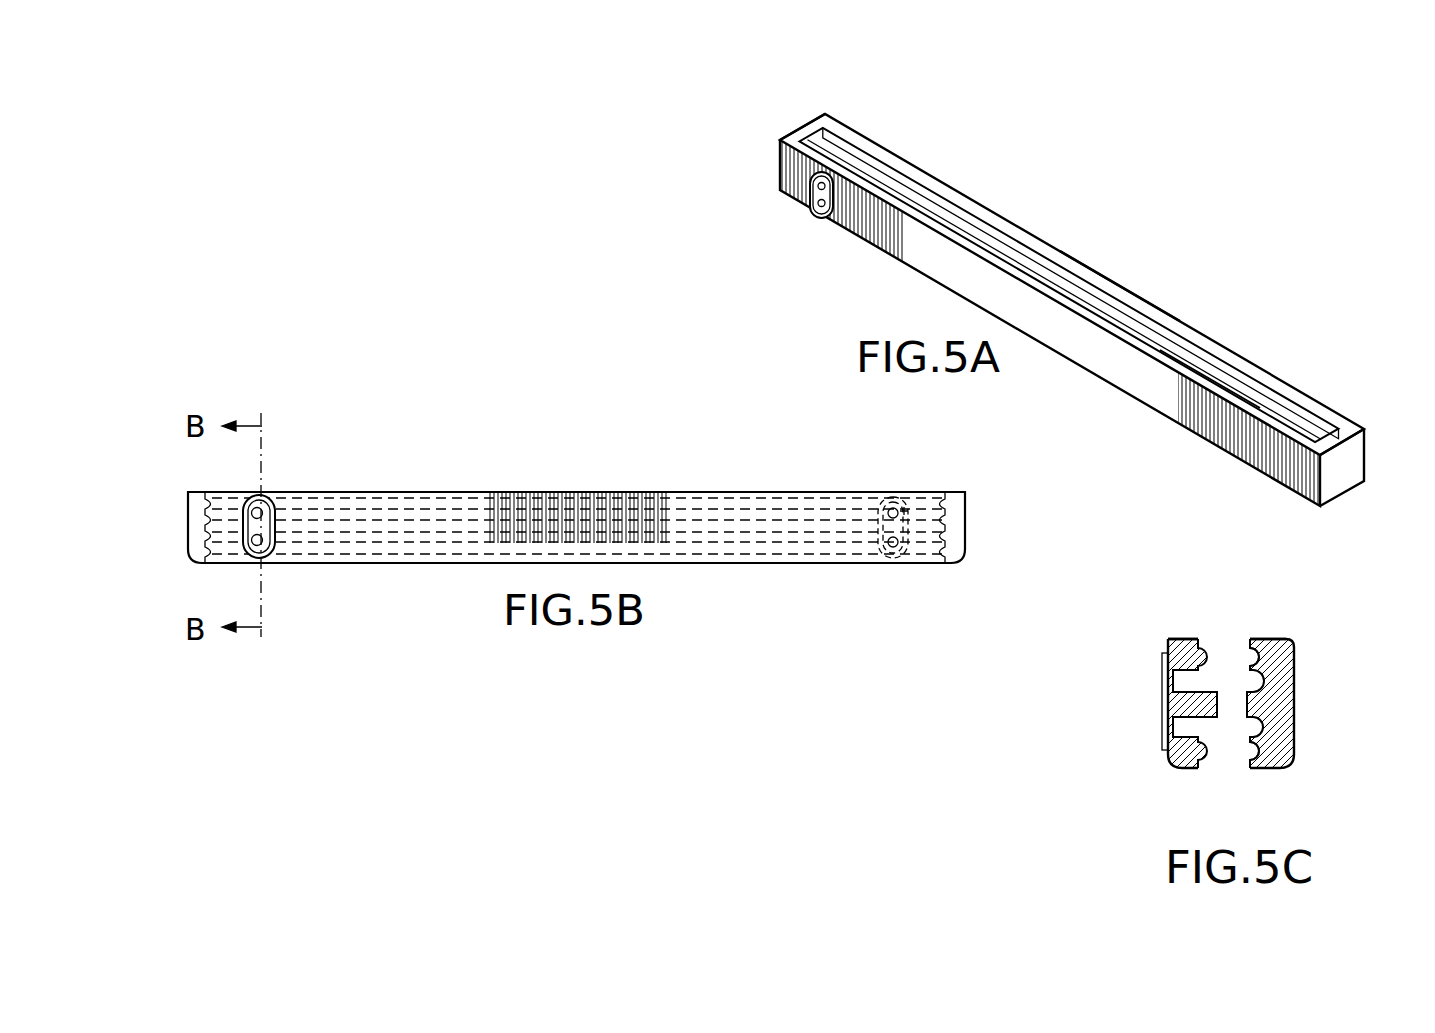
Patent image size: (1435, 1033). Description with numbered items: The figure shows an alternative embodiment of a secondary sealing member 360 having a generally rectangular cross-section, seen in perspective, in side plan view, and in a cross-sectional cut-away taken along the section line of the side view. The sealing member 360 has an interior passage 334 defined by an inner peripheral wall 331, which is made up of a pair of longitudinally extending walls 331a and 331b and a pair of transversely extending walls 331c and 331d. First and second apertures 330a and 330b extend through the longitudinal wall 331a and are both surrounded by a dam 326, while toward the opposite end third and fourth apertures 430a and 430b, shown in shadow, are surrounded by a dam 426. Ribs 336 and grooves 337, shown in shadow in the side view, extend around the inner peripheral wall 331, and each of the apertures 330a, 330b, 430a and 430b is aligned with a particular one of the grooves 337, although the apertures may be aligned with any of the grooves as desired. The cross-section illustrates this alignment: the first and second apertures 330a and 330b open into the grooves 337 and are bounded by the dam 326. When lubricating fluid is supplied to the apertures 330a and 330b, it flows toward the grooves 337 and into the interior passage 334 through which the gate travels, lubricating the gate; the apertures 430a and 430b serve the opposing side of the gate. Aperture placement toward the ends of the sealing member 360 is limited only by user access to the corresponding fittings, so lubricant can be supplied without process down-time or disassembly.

In FIG. 5A, the secondary sealing member 360 is at (742, 118).
In FIG. 5B, the secondary sealing member 360 is at (457, 430).
In FIG. 5C, the inner peripheral wall 331 is at (1280, 703).
In FIG. 5A, the longitudinally extending wall 331a is at (1118, 284).
In FIG. 5A, the longitudinally extending wall 331b is at (1207, 368).
In FIG. 5A, the transversely extending wall 331c is at (1339, 432).
In FIG. 5A, the transversely extending wall 331d is at (805, 126).
In FIG. 5A, the interior passage 334 is at (998, 230).
In FIG. 5C, the interior passage 334 is at (1200, 618).
In FIG. 5A, the dam 326 is at (815, 218).
In FIG. 5B, the dam 326 is at (256, 557).
In FIG. 5C, the dam 326 is at (1164, 648).
In FIG. 5A, the first aperture 330a is at (818, 183).
In FIG. 5B, the first aperture 330a is at (265, 500).
In FIG. 5C, the first aperture 330a is at (1178, 682).
In FIG. 5A, the second aperture 330b is at (818, 199).
In FIG. 5B, the second aperture 330b is at (262, 541).
In FIG. 5C, the second aperture 330b is at (1178, 727).
In FIG. 5B, the ribs 336 is at (602, 547).
In FIG. 5C, the ribs 336 is at (1252, 657).
In FIG. 5B, the grooves 337 is at (379, 537).
In FIG. 5C, the grooves 337 is at (1227, 680).
In FIG. 5B, the dam 426 is at (882, 500).
In FIG. 5B, the third aperture 430a is at (905, 502).
In FIG. 5B, the fourth aperture 430b is at (895, 544).